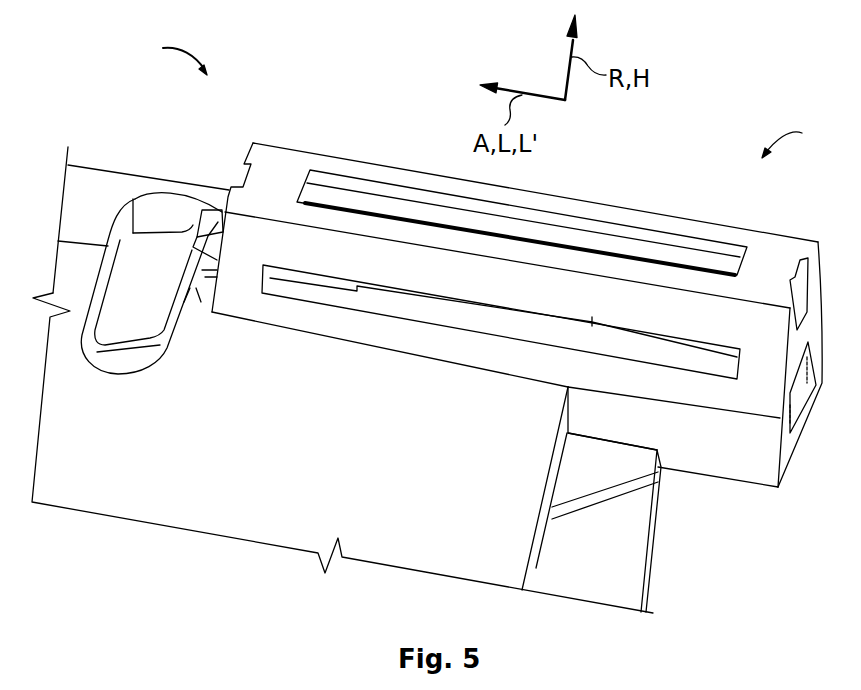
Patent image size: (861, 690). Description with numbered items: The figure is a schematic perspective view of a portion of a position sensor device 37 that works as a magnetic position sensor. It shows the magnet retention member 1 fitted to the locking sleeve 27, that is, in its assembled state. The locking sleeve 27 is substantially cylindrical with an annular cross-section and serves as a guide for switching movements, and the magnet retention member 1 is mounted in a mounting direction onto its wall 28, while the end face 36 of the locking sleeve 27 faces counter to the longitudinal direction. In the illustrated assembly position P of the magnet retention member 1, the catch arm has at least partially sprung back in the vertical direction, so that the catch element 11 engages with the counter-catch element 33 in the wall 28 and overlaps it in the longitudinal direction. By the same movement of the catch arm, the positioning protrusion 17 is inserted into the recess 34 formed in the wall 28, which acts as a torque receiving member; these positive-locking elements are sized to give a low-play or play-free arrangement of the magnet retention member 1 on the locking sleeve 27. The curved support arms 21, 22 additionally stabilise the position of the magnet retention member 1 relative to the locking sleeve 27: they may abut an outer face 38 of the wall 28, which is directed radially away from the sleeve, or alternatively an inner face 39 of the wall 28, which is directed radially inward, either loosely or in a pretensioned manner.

The magnet retention member 1 is at (633, 180).
The catch element 11 is at (182, 263).
The positioning protrusion 17 is at (216, 272).
The support arm 21 is at (600, 503).
The second support arm 22 is at (668, 477).
The locking sleeve 27 is at (95, 170).
The wall 28 is at (307, 393).
The counter-catch element 33 is at (154, 368).
The recess 34 is at (193, 292).
The end face 36 is at (523, 575).
The position sensor device 37 is at (171, 56).
The outer face 38 is at (406, 466).
The inner face 39 is at (608, 569).
The assembly position P is at (790, 140).